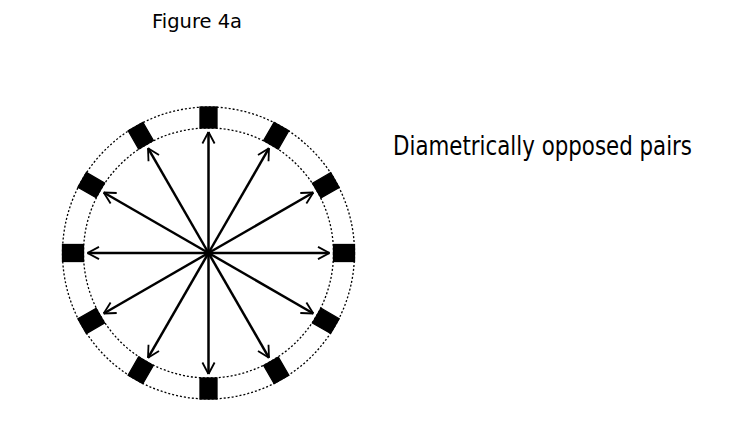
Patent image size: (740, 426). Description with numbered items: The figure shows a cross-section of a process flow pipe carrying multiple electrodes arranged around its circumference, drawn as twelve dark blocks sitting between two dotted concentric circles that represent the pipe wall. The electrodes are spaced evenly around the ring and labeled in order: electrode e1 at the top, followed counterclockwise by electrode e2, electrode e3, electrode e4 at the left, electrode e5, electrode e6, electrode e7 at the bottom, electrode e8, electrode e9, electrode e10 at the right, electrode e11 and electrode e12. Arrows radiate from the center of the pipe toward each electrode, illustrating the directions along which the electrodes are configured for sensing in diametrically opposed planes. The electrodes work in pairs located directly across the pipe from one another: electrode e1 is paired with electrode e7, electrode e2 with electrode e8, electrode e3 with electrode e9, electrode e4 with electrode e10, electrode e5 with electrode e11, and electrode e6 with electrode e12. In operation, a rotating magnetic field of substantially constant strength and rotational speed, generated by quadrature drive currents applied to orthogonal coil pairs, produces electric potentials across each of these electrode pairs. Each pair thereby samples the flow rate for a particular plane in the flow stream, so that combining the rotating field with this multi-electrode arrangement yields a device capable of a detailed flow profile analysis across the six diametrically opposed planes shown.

The electrode e1 is at (207, 104).
The electrode e2 is at (136, 122).
The electrode e3 is at (77, 176).
The electrode e4 is at (57, 256).
The electrode e5 is at (81, 336).
The electrode e6 is at (136, 387).
The electrode e7 is at (211, 402).
The electrode e8 is at (288, 387).
The electrode e9 is at (343, 330).
The electrode e10 is at (368, 256).
The electrode e11 is at (344, 181).
The electrode e12 is at (293, 129).